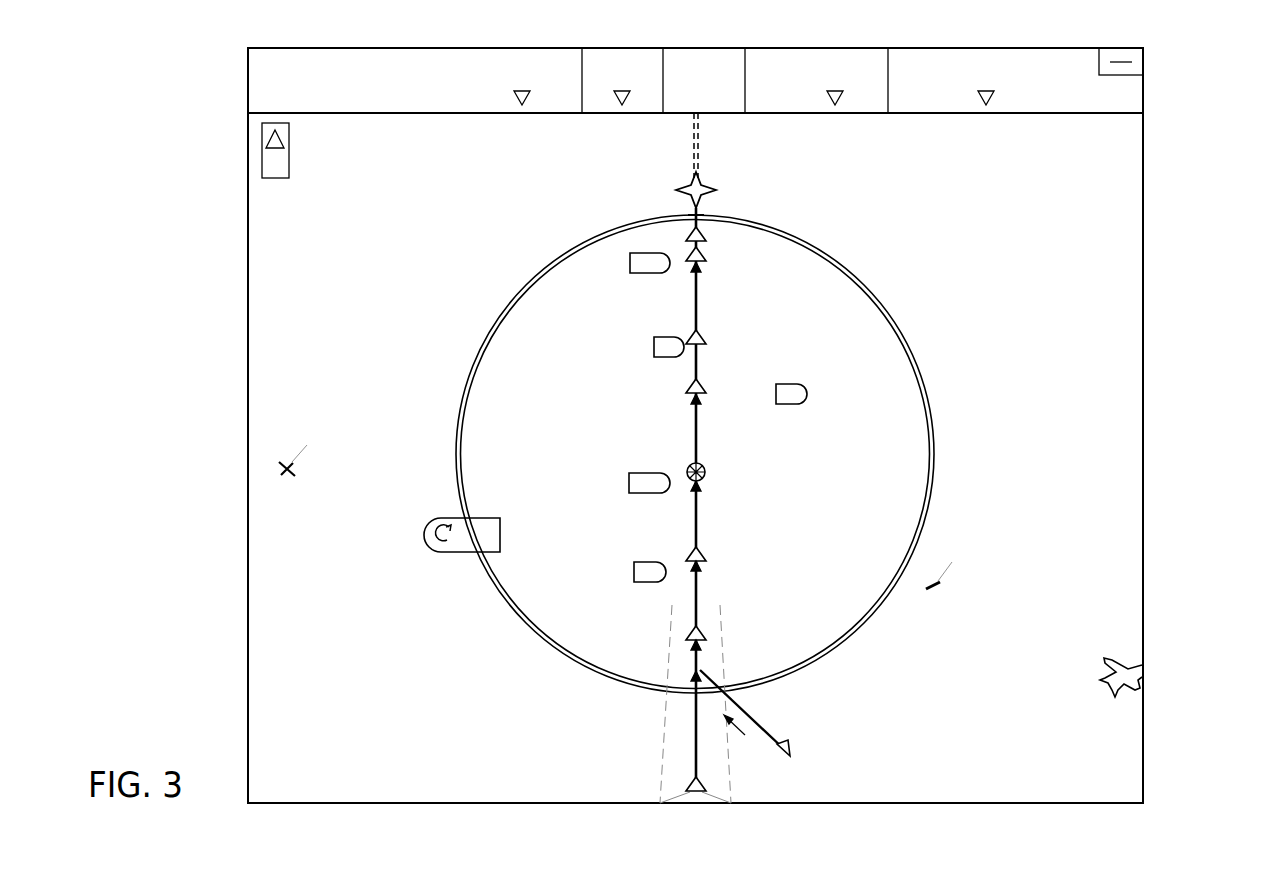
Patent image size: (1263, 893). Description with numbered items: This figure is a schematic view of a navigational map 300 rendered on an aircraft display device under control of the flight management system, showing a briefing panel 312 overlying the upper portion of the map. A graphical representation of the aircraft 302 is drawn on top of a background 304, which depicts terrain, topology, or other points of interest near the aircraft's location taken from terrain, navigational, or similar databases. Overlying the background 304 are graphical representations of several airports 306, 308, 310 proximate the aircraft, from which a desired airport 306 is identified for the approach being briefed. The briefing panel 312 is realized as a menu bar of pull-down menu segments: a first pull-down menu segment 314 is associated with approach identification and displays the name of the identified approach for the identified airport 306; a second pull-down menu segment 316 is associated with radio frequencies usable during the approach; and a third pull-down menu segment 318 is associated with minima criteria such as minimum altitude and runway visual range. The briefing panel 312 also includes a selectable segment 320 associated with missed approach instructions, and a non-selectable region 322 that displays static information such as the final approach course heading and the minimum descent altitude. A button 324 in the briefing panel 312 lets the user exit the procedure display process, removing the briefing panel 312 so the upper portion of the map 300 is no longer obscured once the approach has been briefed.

The navigational map 300 is at (1156, 275).
The graphical representation of the aircraft 302 is at (1106, 660).
The background 304 is at (960, 723).
The airport 306 is at (669, 189).
The airport 308 is at (270, 472).
The airport 310 is at (958, 590).
The briefing panel 312 is at (236, 100).
The first pull-down menu segment 314 is at (477, 47).
The second pull-down menu segment 316 is at (637, 47).
The third pull-down menu segment 318 is at (856, 47).
The selectable segment 320 is at (1064, 47).
The region 322 is at (721, 47).
The button 324 is at (1143, 64).